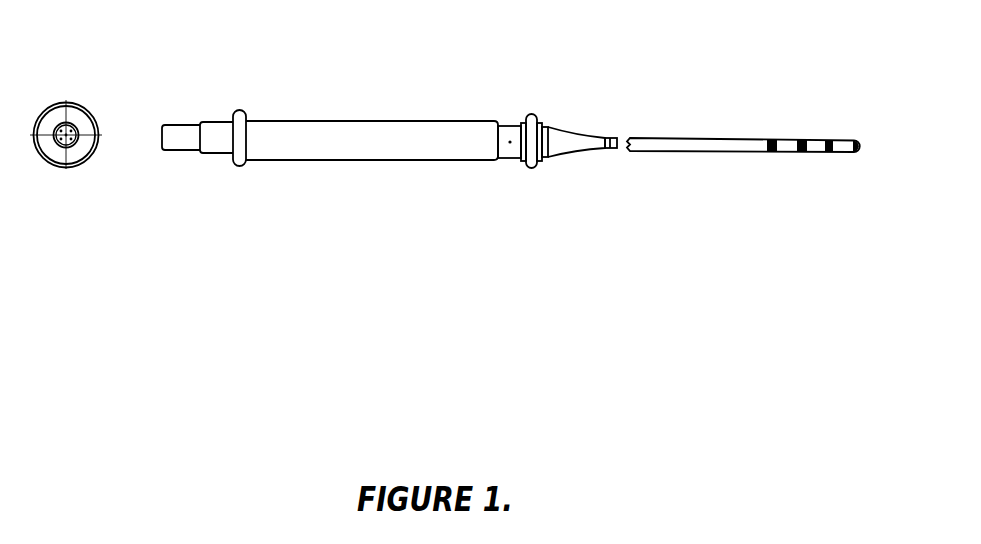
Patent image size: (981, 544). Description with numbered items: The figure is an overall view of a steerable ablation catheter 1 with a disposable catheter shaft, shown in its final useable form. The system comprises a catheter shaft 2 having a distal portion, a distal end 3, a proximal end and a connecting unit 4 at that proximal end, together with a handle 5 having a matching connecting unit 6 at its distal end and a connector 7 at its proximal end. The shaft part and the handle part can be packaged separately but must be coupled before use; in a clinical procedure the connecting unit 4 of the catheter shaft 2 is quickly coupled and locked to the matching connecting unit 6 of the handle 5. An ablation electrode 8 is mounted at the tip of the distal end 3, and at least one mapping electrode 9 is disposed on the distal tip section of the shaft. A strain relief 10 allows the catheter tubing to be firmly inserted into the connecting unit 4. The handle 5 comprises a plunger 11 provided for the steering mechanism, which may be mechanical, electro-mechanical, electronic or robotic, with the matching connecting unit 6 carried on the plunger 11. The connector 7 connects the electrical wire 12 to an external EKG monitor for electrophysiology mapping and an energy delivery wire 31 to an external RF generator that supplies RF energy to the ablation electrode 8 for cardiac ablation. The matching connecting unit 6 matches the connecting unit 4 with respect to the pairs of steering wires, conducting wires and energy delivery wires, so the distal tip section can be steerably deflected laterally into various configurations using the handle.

The steerable ablation catheter 1 is at (444, 97).
The catheter shaft 2 is at (673, 155).
The distal end 3 is at (793, 138).
The connecting unit 4 is at (519, 167).
The handle 5 is at (338, 121).
The matching connecting unit 6 is at (507, 168).
The connector 7 is at (197, 120).
The ablation electrode 8 is at (853, 157).
The mapping electrode 9 is at (802, 155).
The strain relief 10 is at (613, 135).
The plunger 11 is at (509, 125).
The electrical wire 12 is at (67, 128).
The energy delivery wire 31 is at (73, 143).